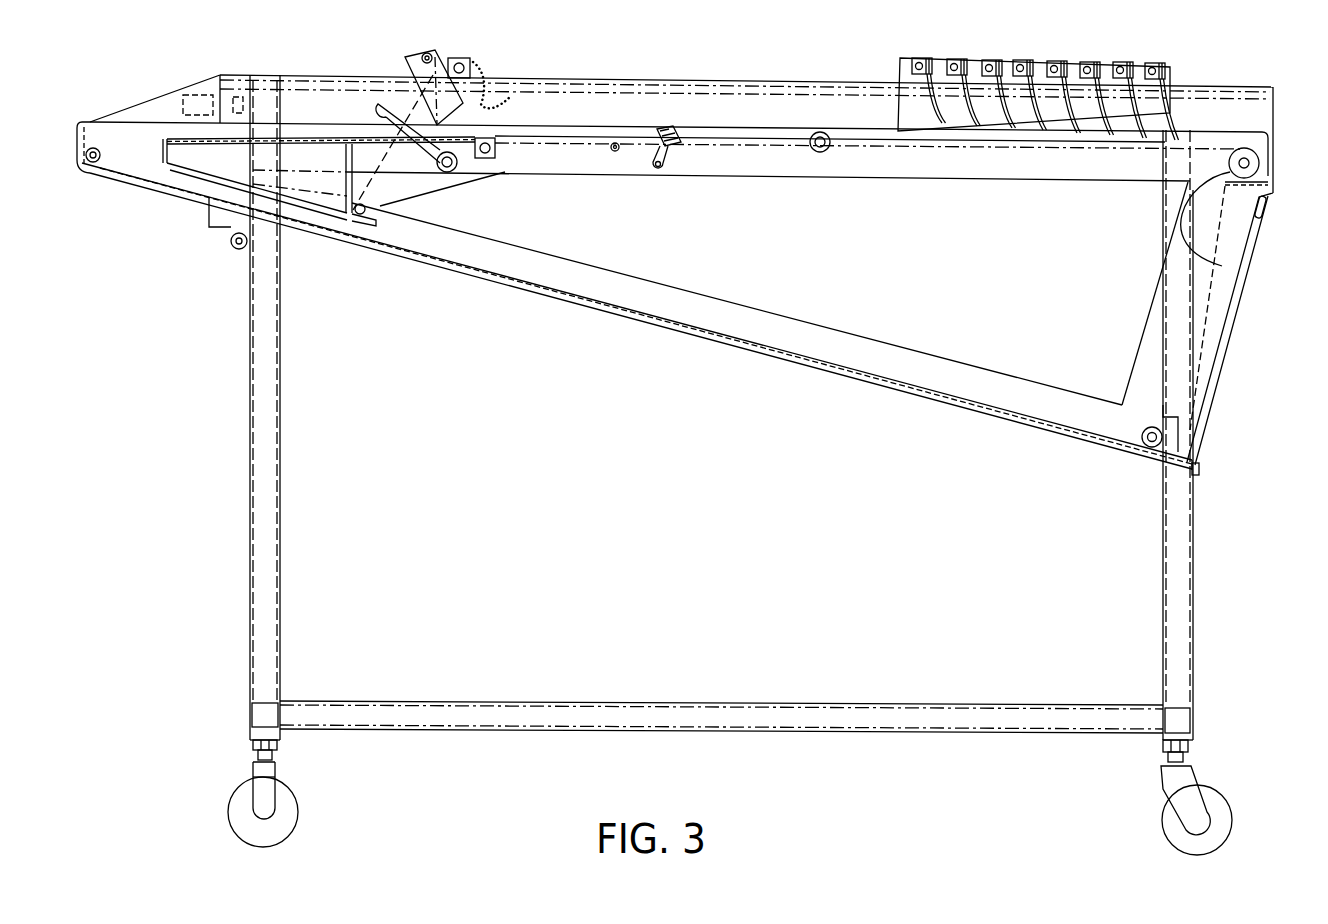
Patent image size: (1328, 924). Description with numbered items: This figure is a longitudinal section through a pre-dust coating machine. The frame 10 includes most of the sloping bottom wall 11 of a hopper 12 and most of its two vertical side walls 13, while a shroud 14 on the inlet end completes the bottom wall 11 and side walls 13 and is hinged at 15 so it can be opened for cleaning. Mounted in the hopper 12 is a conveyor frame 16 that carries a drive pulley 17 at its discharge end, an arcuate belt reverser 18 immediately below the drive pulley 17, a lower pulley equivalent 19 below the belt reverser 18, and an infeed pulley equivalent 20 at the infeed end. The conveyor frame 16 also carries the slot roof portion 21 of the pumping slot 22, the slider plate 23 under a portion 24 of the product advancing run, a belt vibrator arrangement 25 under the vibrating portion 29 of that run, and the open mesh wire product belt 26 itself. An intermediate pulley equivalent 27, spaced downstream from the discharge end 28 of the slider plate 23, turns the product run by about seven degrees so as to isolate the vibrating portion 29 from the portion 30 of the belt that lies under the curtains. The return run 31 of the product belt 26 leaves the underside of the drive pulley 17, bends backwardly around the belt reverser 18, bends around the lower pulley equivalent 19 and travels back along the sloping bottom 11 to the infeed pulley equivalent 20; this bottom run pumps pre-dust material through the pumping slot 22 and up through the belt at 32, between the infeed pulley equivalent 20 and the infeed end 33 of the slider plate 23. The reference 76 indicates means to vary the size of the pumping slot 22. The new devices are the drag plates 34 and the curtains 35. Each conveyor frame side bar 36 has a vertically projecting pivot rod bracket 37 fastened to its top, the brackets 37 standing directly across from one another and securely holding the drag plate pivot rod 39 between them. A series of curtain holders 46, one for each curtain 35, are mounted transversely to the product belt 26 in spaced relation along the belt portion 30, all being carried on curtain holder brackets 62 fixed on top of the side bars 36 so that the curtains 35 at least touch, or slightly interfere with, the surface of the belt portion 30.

The frame 10 is at (285, 493).
The sloping bottom wall 11 is at (587, 301).
The hopper 12 is at (550, 217).
The vertical side walls 13 is at (905, 313).
The shroud 14 is at (70, 170).
The hinge 15 is at (237, 251).
The conveyor frame 16 is at (673, 261).
The drive pulley 17 is at (1260, 168).
The arcuate belt reverser 18 is at (1167, 222).
The lower pulley equivalent 19 is at (1150, 455).
The infeed pulley equivalent 20 is at (94, 164).
The slot roof portion 21 is at (300, 222).
The pumping slot 22 is at (337, 225).
The slider plate 23 is at (410, 146).
The product advancing run portion 24 is at (312, 133).
The belt vibrator arrangement 25 is at (661, 158).
The product belt 26 is at (545, 124).
The intermediate pulley equivalent 27 is at (818, 153).
The discharge end of slider plate 28 is at (497, 147).
The vibrating portion of product run 29 is at (590, 128).
The product belt portion under curtains 30 is at (1043, 143).
The return run 31 is at (930, 390).
The infeed end of product advancing run 32 is at (118, 148).
The infeed end of slider plate 33 is at (165, 150).
The drag plates 34 is at (404, 42).
The curtains 35 is at (1040, 96).
The conveyor frame side bar 36 is at (902, 176).
The pivot rod bracket 37 is at (403, 104).
The drag plate pivot rod 39 is at (436, 61).
The curtain holder 46 is at (927, 57).
The curtain holder bracket 62 is at (905, 70).
The pumping slot adjustment 76 is at (378, 226).